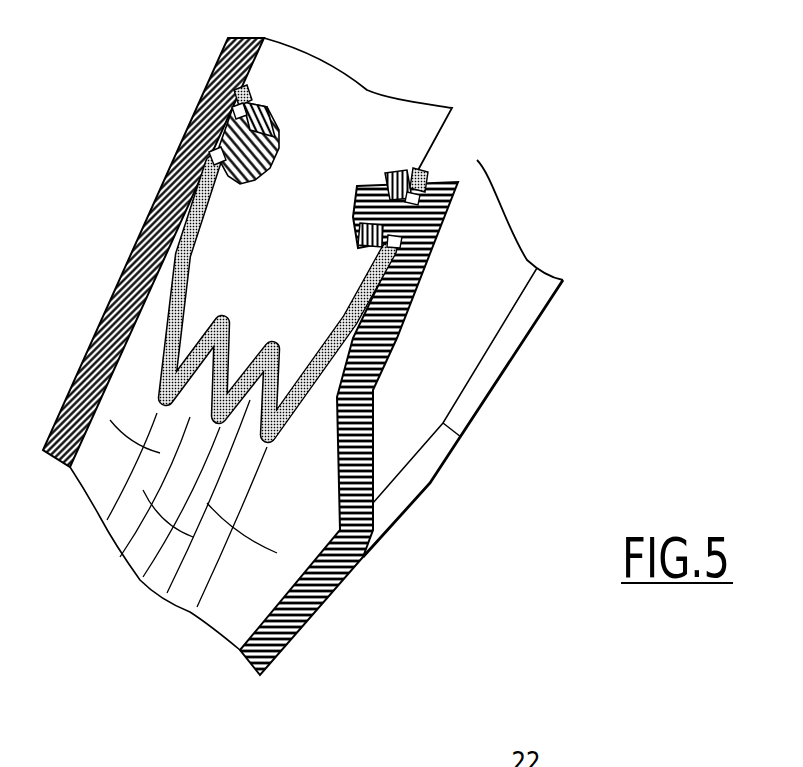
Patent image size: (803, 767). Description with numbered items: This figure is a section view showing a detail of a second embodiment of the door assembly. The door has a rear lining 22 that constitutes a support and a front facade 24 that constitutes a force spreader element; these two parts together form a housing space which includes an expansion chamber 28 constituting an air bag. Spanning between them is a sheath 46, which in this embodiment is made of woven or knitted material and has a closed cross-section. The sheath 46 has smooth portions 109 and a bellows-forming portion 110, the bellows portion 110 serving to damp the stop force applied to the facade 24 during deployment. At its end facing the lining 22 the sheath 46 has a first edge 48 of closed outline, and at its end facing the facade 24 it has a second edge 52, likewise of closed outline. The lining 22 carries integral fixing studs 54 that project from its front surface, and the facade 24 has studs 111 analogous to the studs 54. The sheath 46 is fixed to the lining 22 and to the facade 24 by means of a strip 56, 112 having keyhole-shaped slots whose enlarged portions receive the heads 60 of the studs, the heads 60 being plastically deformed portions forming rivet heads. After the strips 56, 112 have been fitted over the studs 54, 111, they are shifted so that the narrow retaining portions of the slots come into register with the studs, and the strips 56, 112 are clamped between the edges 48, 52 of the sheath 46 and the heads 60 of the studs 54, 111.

The rear lining 22 is at (158, 200).
The front facade 24 is at (302, 612).
The expansion chamber 28 is at (153, 596).
The sheath 46 is at (340, 323).
The first edge 48 is at (248, 94).
The second edge 52 is at (428, 170).
The fixing studs 54 is at (233, 135).
The strip 56 is at (276, 108).
The rivet heads 60 is at (252, 180).
The smooth portions 109 is at (186, 288).
The bellows-forming portion 110 is at (253, 333).
The studs 111 is at (400, 215).
The strip 112 is at (400, 175).